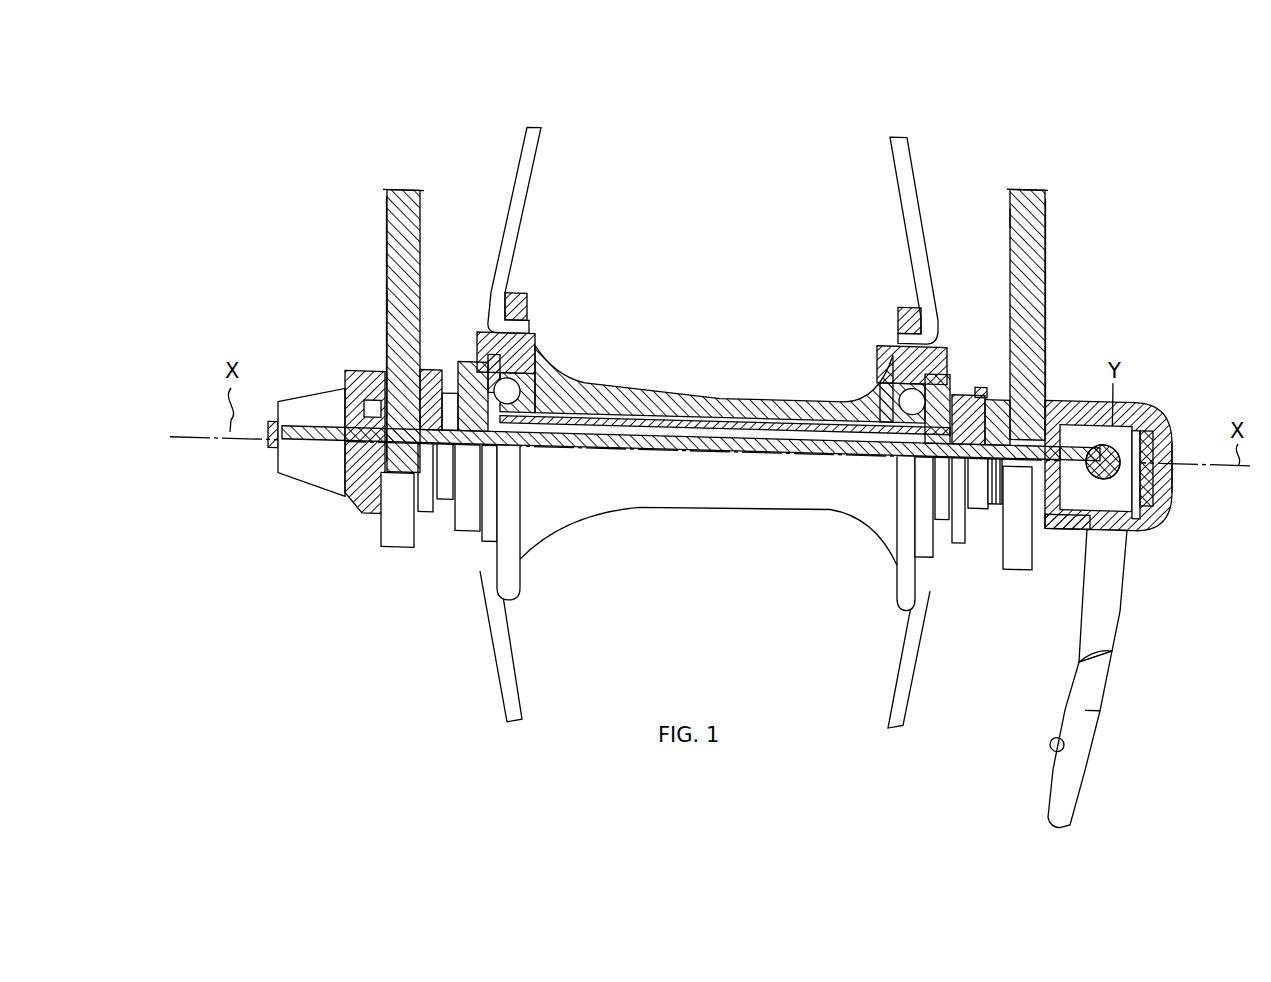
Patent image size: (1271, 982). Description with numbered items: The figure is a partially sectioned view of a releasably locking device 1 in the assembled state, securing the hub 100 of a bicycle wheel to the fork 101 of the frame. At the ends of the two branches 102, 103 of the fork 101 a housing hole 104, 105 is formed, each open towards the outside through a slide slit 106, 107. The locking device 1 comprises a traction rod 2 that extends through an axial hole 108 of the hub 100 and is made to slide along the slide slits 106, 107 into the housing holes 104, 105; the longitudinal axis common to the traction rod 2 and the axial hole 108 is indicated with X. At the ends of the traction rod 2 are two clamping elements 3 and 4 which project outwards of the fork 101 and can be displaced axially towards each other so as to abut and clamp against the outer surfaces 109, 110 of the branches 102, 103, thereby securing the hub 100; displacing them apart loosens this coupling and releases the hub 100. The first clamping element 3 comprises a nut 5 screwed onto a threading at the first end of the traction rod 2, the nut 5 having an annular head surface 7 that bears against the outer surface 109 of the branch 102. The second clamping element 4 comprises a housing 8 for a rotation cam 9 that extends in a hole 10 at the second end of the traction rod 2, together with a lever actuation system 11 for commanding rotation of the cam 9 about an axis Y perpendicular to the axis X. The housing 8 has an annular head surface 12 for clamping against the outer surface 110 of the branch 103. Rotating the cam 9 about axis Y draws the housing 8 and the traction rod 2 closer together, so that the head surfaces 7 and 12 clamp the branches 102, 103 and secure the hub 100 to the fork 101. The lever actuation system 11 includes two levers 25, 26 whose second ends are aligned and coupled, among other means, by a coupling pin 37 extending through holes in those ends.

The releasably locking device 1 is at (1162, 158).
The traction rod 2 is at (757, 447).
The first clamping element 3 is at (243, 497).
The second clamping element 4 is at (1188, 382).
The nut 5 is at (317, 462).
The annular head surface 7 is at (385, 372).
The housing 8 is at (1165, 506).
The rotation cam 9 is at (1122, 478).
The hole 10 is at (1058, 520).
The lever actuation system 11 is at (1130, 745).
The annular head surface 12 is at (1043, 383).
The lever 25 is at (1115, 562).
The lever 26 is at (1100, 698).
The coupling pin 37 is at (1052, 750).
The hub 100 is at (641, 490).
The fork 101 is at (410, 155).
The branch 102 is at (388, 218).
The branch 103 is at (1048, 222).
The housing hole 104 is at (386, 366).
The housing hole 105 is at (1006, 383).
The slide slit 106 is at (397, 545).
The slide slit 107 is at (1004, 565).
The axial hole 108 is at (667, 430).
The outer surface 109 is at (386, 282).
The outer surface 110 is at (1050, 312).